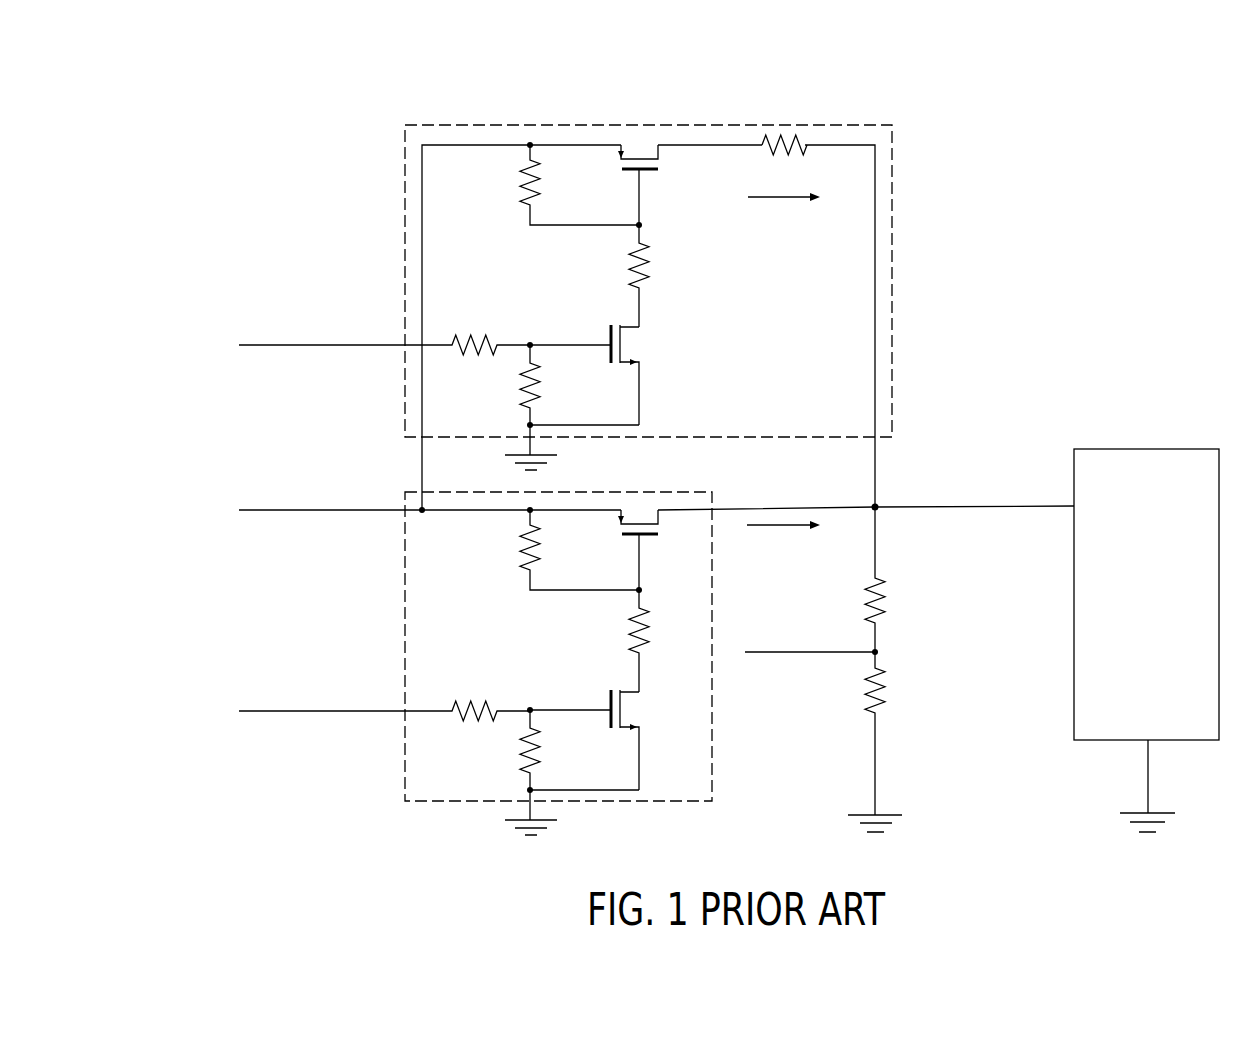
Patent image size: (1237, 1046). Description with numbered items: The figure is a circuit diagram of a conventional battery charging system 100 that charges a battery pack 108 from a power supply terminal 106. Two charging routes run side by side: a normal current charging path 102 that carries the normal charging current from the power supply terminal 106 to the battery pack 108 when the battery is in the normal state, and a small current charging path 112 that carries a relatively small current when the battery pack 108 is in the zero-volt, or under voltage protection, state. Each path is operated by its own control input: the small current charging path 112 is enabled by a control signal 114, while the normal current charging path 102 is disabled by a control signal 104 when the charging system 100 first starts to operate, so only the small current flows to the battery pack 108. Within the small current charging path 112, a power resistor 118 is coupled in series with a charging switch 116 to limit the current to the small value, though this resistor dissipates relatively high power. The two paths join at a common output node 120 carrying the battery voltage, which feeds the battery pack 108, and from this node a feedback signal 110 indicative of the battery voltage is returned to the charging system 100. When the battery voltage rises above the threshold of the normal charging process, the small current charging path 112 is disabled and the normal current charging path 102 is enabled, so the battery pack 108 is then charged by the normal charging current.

The battery charging system 100 is at (262, 133).
The normal current charging path 102 is at (672, 487).
The control signal 104 is at (295, 711).
The power supply terminal 106 is at (295, 509).
The battery pack 108 is at (1128, 641).
The feedback signal 110 is at (802, 652).
The small current charging path 112 is at (860, 122).
The control signal 114 is at (295, 344).
The charging switch 116 is at (648, 174).
The power resistor 118 is at (771, 151).
The battery voltage node VBAT 120 is at (873, 506).